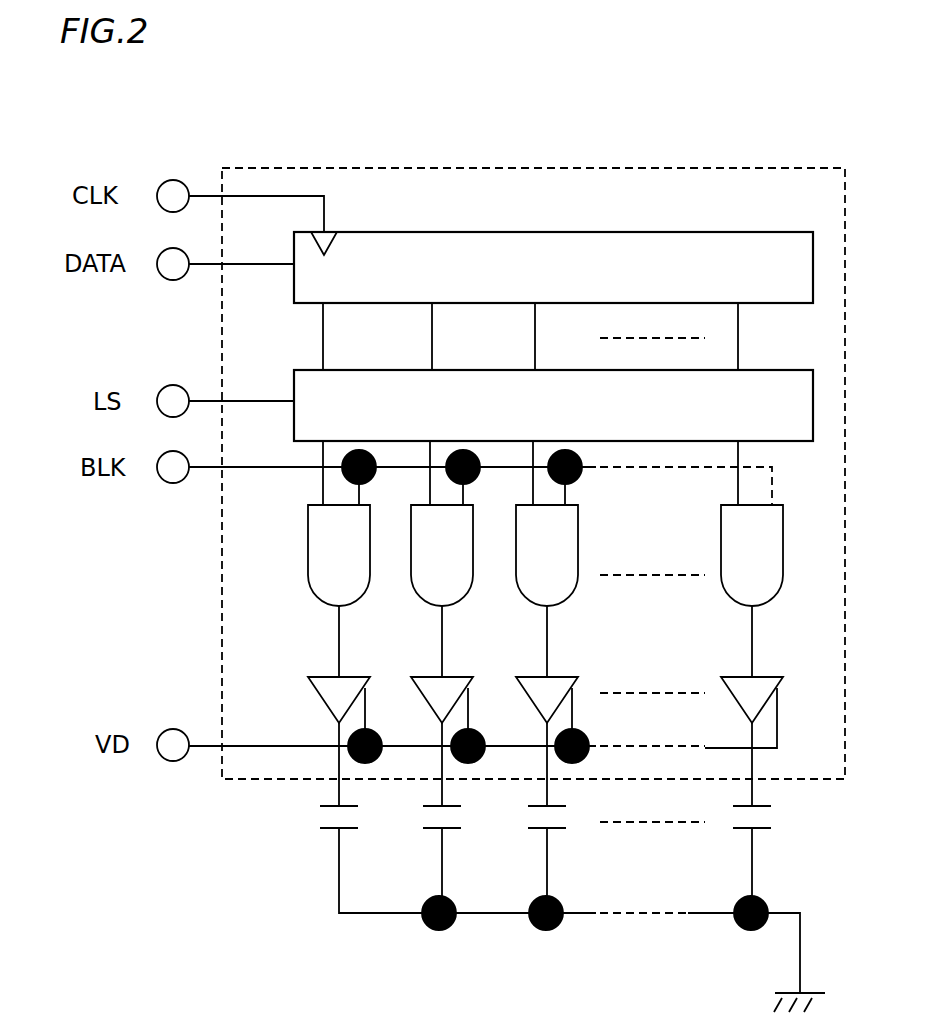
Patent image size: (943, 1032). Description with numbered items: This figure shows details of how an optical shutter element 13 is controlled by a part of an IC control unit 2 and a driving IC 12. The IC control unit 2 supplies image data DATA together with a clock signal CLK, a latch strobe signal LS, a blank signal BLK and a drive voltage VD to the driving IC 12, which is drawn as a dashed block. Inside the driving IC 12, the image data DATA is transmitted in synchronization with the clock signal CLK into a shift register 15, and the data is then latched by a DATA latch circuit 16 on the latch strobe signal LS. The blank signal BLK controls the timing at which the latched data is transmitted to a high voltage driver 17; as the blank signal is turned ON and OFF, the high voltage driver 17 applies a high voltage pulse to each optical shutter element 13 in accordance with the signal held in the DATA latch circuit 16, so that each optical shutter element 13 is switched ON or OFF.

The IC control unit 2 is at (533, 446).
The driving IC 12 is at (631, 168).
The shift register 15 is at (712, 232).
The DATA latch circuit 16 is at (754, 370).
The high voltage driver 17 is at (425, 677).
The optical shutter element 13 is at (423, 828).